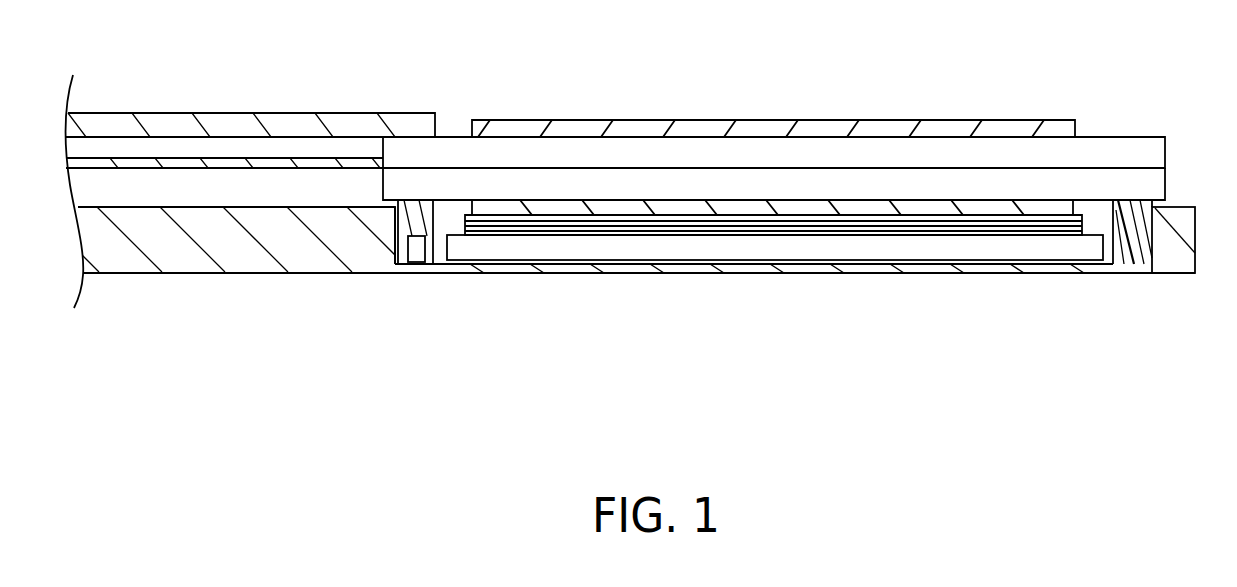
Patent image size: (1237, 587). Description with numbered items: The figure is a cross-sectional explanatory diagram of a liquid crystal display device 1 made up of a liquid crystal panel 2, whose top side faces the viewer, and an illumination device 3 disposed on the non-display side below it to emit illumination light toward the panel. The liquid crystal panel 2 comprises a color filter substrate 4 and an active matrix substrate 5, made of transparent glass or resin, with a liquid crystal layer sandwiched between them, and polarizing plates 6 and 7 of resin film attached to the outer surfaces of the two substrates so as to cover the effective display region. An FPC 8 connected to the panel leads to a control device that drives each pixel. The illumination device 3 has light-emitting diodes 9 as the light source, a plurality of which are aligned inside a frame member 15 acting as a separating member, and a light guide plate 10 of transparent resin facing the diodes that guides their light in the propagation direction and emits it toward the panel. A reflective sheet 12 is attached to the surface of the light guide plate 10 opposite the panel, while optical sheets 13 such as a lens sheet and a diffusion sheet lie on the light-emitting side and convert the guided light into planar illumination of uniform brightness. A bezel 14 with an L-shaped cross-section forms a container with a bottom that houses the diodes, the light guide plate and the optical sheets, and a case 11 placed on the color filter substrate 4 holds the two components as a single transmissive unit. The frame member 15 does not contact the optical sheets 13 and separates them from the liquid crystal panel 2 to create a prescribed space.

The liquid crystal display device 1 is at (619, 170).
The liquid crystal panel 2 is at (793, 133).
The illumination device 3 is at (1003, 275).
The color filter substrate 4 is at (1136, 156).
The active matrix substrate 5 is at (1136, 188).
The polarizing plate 6 is at (1072, 128).
The polarizing plate 7 is at (678, 208).
The FPC 8 is at (130, 162).
The light-emitting diode 9 is at (415, 250).
The light guide plate 10 is at (740, 245).
The case 11 is at (237, 125).
The reflective sheet 12 is at (773, 272).
The optical sheets 13 is at (937, 225).
The bezel 14 is at (217, 268).
The frame member 15 is at (396, 223).